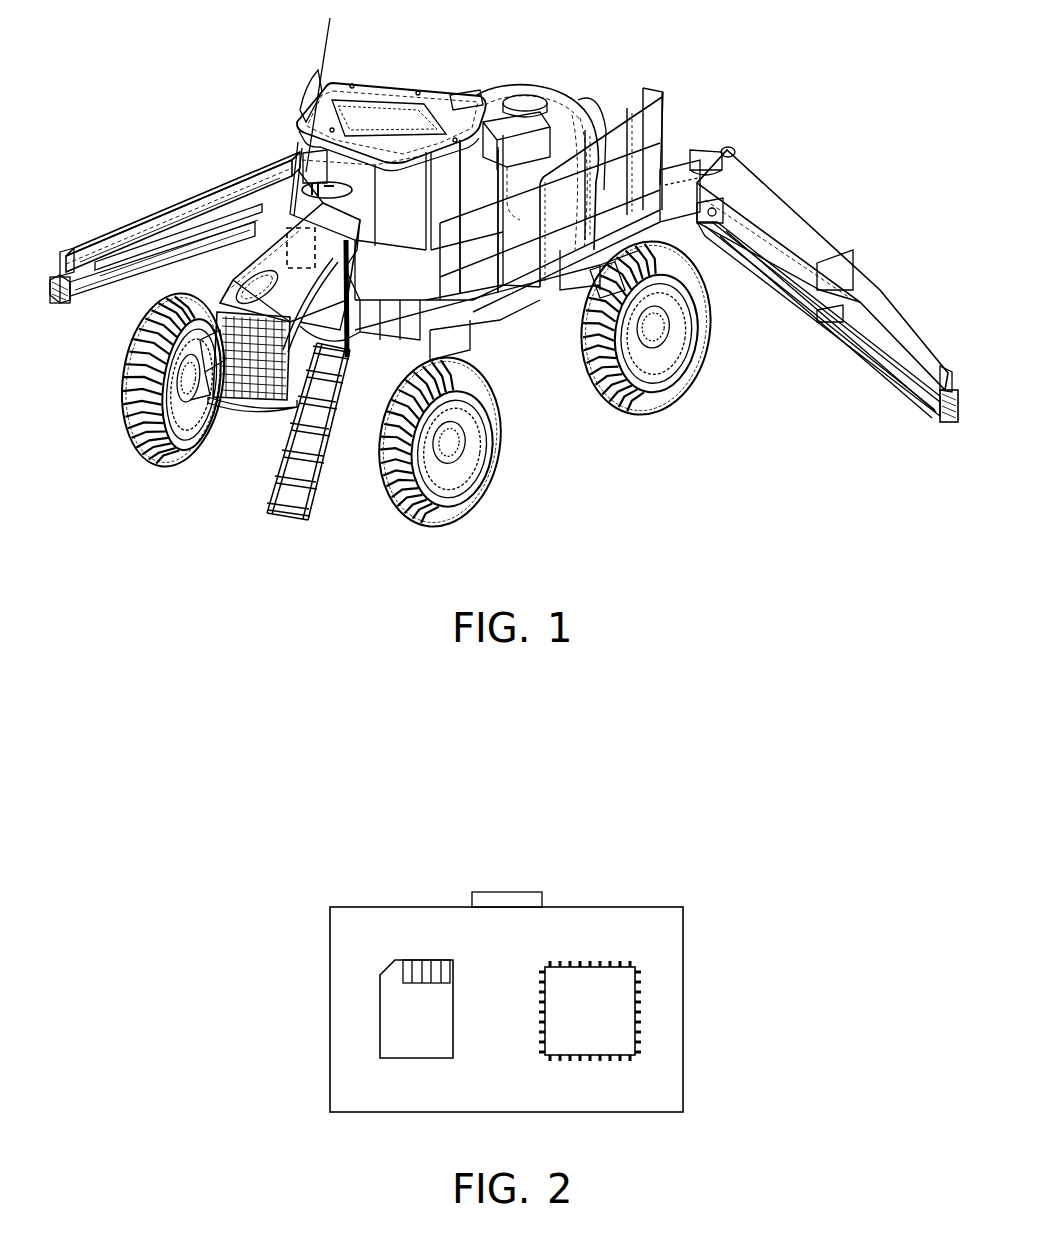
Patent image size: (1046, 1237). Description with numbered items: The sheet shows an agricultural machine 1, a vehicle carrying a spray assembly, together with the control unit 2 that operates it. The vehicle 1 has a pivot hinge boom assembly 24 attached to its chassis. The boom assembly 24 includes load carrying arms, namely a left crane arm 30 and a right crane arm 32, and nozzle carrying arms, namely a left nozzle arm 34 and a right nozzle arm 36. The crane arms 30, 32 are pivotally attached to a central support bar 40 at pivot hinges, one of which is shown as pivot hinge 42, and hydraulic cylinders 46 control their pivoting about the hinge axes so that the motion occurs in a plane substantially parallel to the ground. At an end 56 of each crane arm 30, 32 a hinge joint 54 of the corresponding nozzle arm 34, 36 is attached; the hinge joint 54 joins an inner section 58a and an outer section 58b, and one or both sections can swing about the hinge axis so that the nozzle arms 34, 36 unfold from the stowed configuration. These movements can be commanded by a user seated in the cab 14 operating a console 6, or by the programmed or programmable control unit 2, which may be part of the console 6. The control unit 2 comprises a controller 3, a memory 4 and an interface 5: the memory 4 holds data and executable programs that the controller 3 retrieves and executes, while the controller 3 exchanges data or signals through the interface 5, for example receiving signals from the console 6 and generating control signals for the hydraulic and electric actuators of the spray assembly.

In FIG. 1, the agricultural machine 1 is at (225, 46).
In FIG. 1, the control unit 2 is at (287, 250).
In FIG. 2, the control unit 2 is at (598, 882).
In FIG. 2, the controller 3 is at (615, 1010).
In FIG. 2, the memory 4 is at (393, 1012).
In FIG. 2, the interface 5 is at (497, 898).
In FIG. 1, the console 6 is at (304, 178).
In FIG. 1, the cab 14 is at (379, 218).
In FIG. 1, the pivot hinge boom assembly 24 is at (682, 180).
In FIG. 1, the left crane arm 30 is at (786, 220).
In FIG. 1, the right crane arm 32 is at (192, 205).
In FIG. 1, the left nozzle arm 34 is at (800, 300).
In FIG. 1, the right nozzle arm 36 is at (107, 292).
In FIG. 1, the central support bar 40 is at (593, 156).
In FIG. 1, the pivot hinge 42 is at (712, 200).
In FIG. 1, the hydraulic cylinders 46 is at (674, 140).
In FIG. 1, the hinge joint 54 is at (63, 306).
In FIG. 1, the end 56 is at (62, 258).
In FIG. 1, the inner section 58a is at (135, 318).
In FIG. 1, the outer section 58b is at (225, 212).